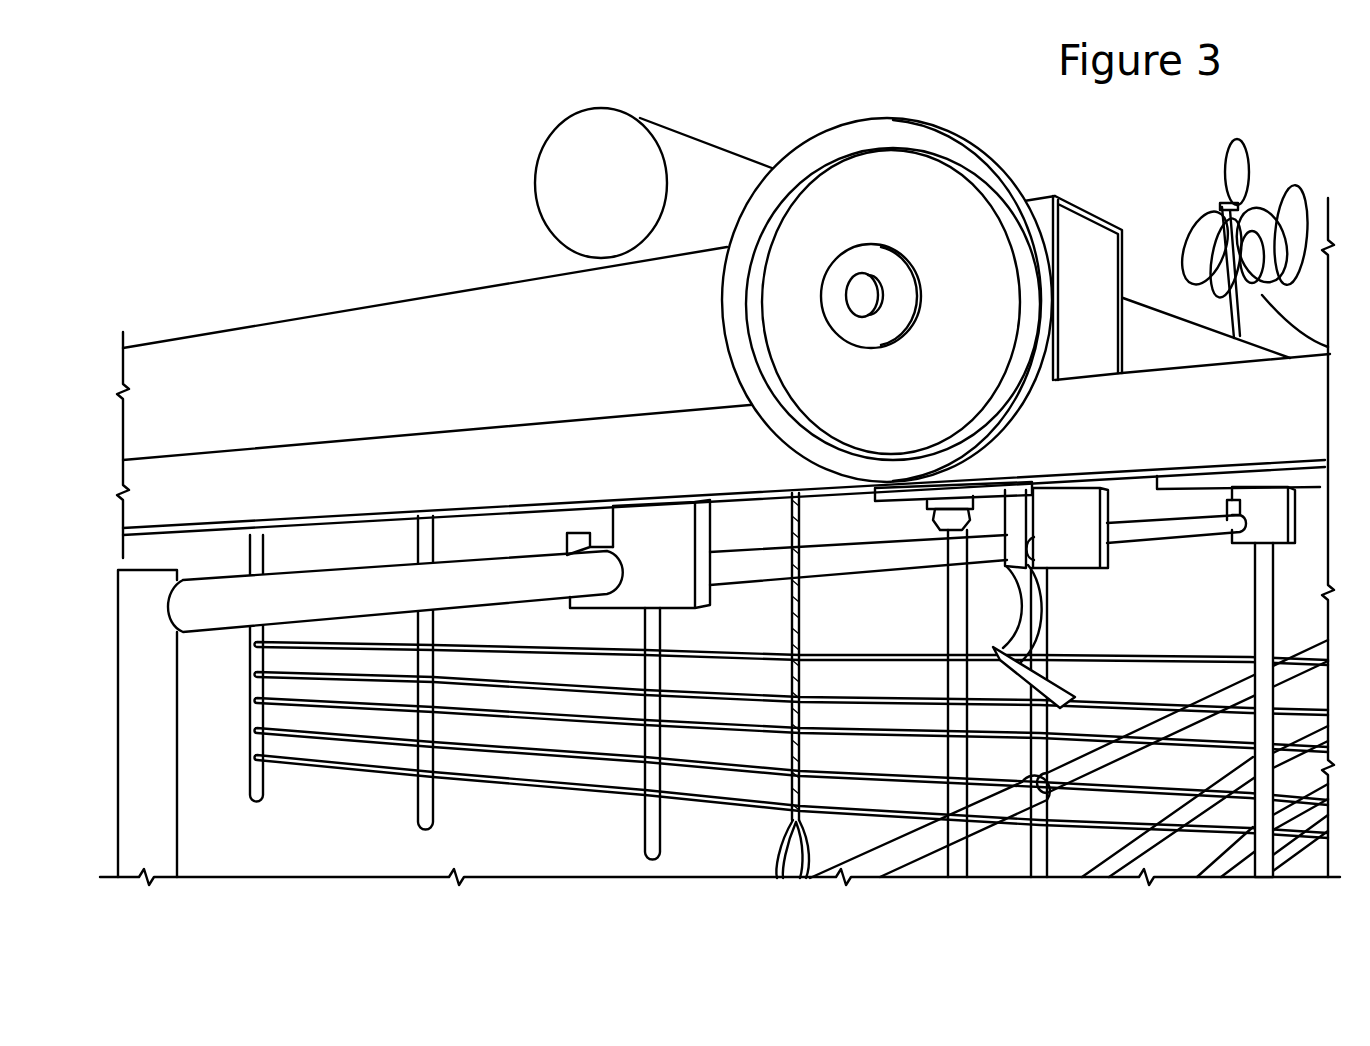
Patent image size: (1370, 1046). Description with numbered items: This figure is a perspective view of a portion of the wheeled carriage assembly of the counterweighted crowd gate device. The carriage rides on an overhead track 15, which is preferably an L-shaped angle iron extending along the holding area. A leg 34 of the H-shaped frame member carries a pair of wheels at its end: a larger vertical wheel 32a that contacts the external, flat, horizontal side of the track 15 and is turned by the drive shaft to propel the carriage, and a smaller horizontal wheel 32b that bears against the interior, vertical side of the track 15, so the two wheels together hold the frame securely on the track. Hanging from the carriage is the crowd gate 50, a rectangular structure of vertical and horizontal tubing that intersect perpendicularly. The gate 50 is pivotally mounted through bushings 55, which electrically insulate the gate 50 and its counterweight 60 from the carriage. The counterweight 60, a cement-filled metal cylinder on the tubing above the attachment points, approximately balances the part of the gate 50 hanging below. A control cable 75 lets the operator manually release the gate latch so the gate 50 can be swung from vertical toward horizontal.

The overhead track 15 is at (1219, 440).
The leg 34 is at (450, 376).
The counterweight 60 is at (622, 205).
The larger vertical wheel 32a is at (722, 318).
The smaller horizontal wheel 32b is at (902, 495).
The crowd gate 50 is at (1125, 742).
The bushing 55 is at (1267, 522).
The control cable 75 is at (798, 740).